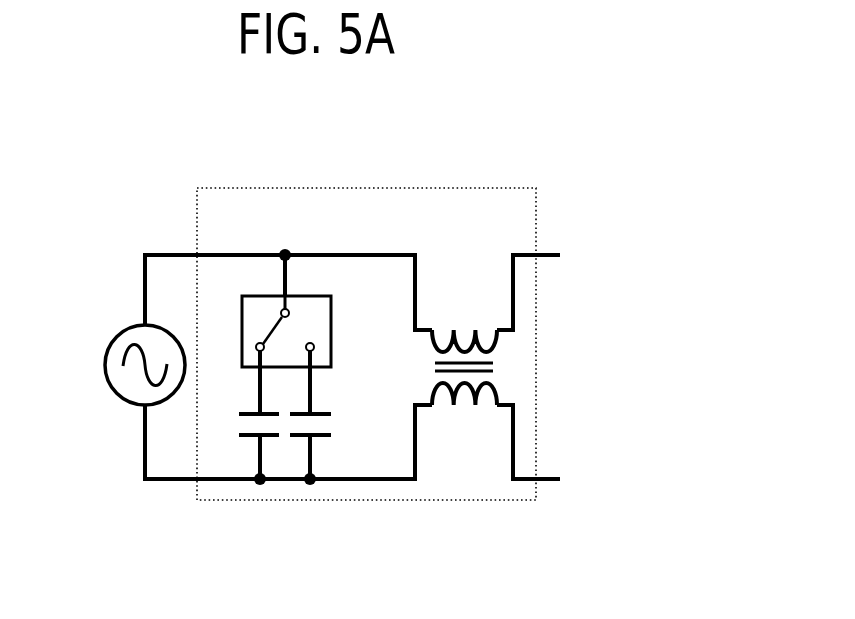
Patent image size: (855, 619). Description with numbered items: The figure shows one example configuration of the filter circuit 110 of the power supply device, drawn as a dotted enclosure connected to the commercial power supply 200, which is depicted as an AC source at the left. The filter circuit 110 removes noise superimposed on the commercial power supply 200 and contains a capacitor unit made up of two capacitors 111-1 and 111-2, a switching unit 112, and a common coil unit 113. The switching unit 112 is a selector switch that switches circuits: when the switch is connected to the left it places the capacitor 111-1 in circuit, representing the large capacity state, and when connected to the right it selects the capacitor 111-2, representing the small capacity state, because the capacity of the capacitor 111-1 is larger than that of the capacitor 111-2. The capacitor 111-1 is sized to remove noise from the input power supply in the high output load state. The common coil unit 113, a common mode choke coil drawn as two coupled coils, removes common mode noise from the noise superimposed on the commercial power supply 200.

The filter circuit 110 is at (450, 188).
The switching unit 112 is at (256, 295).
The capacitor 111-1 is at (246, 438).
The capacitor 111-2 is at (323, 438).
The common coil unit 113 is at (470, 407).
The commercial power supply 200 is at (122, 402).